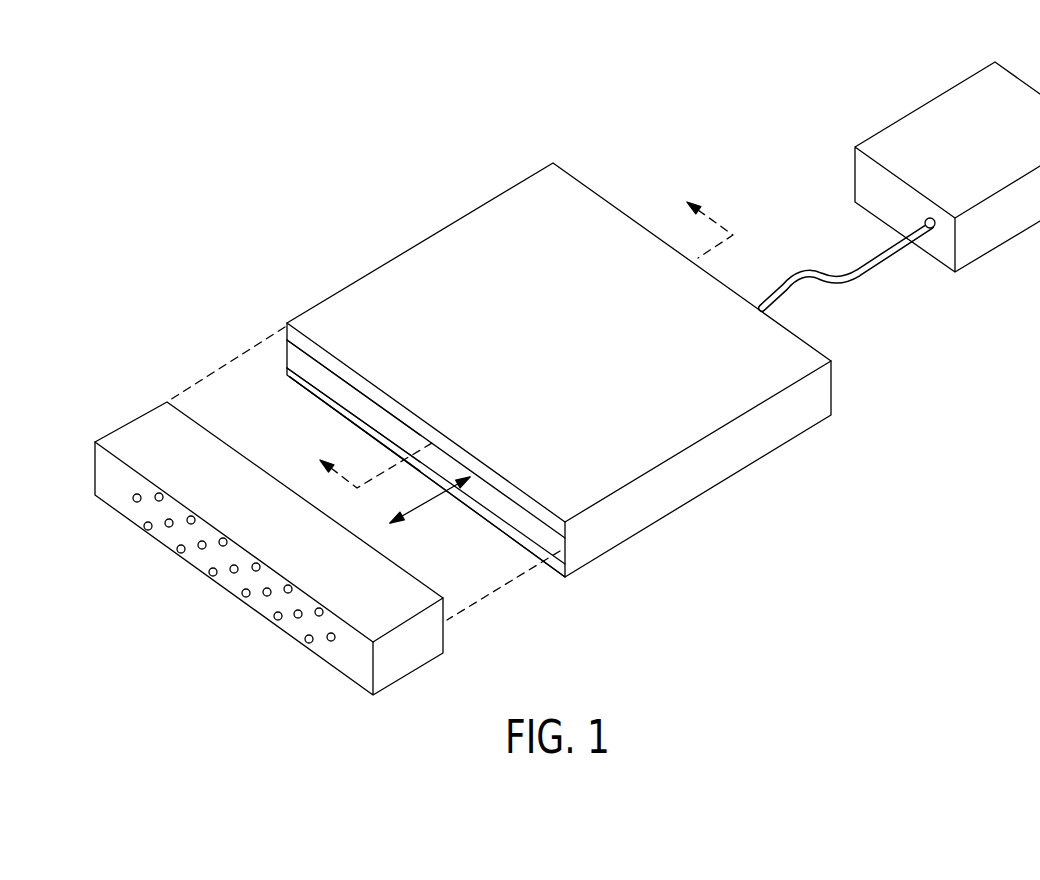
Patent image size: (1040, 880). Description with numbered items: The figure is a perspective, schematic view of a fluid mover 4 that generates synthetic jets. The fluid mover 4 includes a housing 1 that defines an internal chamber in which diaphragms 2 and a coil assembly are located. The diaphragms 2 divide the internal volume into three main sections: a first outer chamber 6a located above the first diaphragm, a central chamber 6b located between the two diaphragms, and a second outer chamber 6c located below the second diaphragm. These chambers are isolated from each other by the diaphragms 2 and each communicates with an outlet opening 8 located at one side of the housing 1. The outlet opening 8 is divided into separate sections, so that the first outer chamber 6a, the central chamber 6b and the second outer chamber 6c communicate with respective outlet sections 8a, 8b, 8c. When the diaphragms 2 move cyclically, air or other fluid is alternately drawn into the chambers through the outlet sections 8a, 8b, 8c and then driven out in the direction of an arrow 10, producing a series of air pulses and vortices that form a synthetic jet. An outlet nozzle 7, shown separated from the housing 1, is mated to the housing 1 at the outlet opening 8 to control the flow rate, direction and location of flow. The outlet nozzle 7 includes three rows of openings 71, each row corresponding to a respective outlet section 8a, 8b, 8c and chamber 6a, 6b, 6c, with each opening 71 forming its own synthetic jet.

The housing 1 is at (442, 257).
The diaphragms 2 is at (514, 335).
The fluid mover 4 is at (235, 198).
The first outer chamber 6a is at (533, 507).
The central chamber 6b is at (542, 538).
The second outer chamber 6c is at (513, 540).
The outlet nozzle 7 is at (400, 660).
The outlet opening 8 is at (262, 437).
The outlet opening section 8a is at (307, 343).
The outlet opening section 8b is at (310, 382).
The outlet opening section 8c is at (306, 390).
The arrow 10 is at (423, 505).
The nozzle openings 71 is at (145, 526).